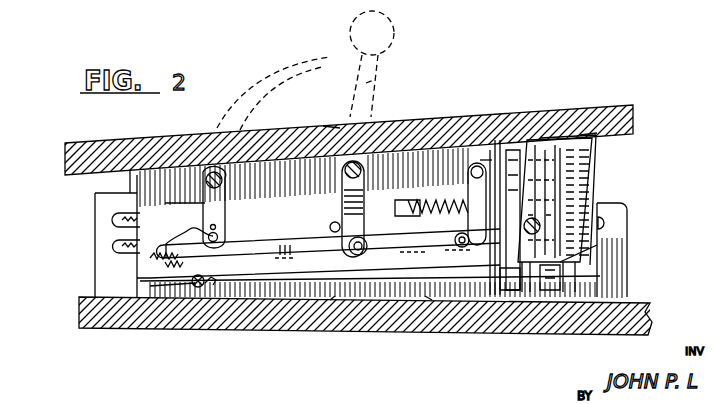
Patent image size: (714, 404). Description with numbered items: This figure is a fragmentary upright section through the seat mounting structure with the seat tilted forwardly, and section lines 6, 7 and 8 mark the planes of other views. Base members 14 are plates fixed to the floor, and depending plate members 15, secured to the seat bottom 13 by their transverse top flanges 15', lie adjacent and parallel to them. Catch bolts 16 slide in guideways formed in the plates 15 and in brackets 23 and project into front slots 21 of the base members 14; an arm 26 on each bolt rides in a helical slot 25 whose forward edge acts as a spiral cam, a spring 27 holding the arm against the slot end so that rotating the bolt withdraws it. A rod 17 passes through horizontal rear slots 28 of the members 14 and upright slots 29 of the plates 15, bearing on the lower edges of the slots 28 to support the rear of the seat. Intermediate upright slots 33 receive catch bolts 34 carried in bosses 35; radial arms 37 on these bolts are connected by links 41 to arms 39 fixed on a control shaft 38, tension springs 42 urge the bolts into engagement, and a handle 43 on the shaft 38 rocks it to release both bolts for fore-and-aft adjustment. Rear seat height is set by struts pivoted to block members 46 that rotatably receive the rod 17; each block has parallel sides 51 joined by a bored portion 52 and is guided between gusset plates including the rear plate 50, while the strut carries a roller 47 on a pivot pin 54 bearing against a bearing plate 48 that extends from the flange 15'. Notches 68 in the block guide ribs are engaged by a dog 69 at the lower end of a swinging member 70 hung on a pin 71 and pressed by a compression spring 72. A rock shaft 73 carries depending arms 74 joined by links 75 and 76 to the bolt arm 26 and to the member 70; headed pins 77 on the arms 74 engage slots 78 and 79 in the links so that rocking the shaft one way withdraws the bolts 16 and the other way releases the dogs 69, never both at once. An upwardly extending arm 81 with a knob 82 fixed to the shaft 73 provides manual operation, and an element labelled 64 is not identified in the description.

The section line 6- 6 is at (210, 125).
The section line 7- 7 is at (345, 115).
The section line 8- 8 is at (435, 115).
The seat bottom 13 is at (633, 112).
The base members 14 is at (632, 242).
The members 15 is at (619, 210).
The transverse top edge flanges 15' is at (603, 142).
The catch bolts 16 is at (200, 290).
The rod 17 is at (556, 226).
The interior slots 21 is at (115, 221).
The brackets 23 is at (150, 286).
The helical spiral slot 25 is at (215, 277).
The arm 26 is at (58, 265).
The spring 27 is at (145, 268).
The slots 28 is at (606, 225).
The upright slots 29 is at (592, 166).
The interior slots 33 is at (432, 300).
The catch-bolts 34 is at (325, 253).
The cylindrical bosses 35 is at (412, 263).
The arms 37 is at (335, 300).
The rod or shaft 38 is at (173, 138).
The radial arms 39 is at (165, 203).
The links 41 is at (330, 224).
The tension springs 42 is at (160, 239).
The radial arm 43 is at (242, 105).
The block members 46 is at (545, 300).
The rollers 47 is at (510, 148).
The bearing plates 48 is at (496, 140).
The gusset plate 50 is at (562, 150).
The block sides 51 is at (552, 300).
The portion 52 is at (522, 300).
The pivot pin 54 is at (535, 145).
The slide 64 is at (552, 145).
The notches 68 is at (505, 300).
The dog 69 is at (452, 300).
The swinging member 70 is at (467, 184).
The pin 71 is at (474, 116).
The compression spring 72 is at (431, 204).
The rock shaft 73 is at (323, 126).
The arms 74 is at (367, 209).
The link 75 is at (274, 250).
The link 76 is at (443, 242).
The headed pins 77 is at (396, 217).
The slot 78 is at (284, 267).
The slot 79 is at (457, 260).
The arm 81 is at (375, 73).
The knob 82 is at (396, 28).